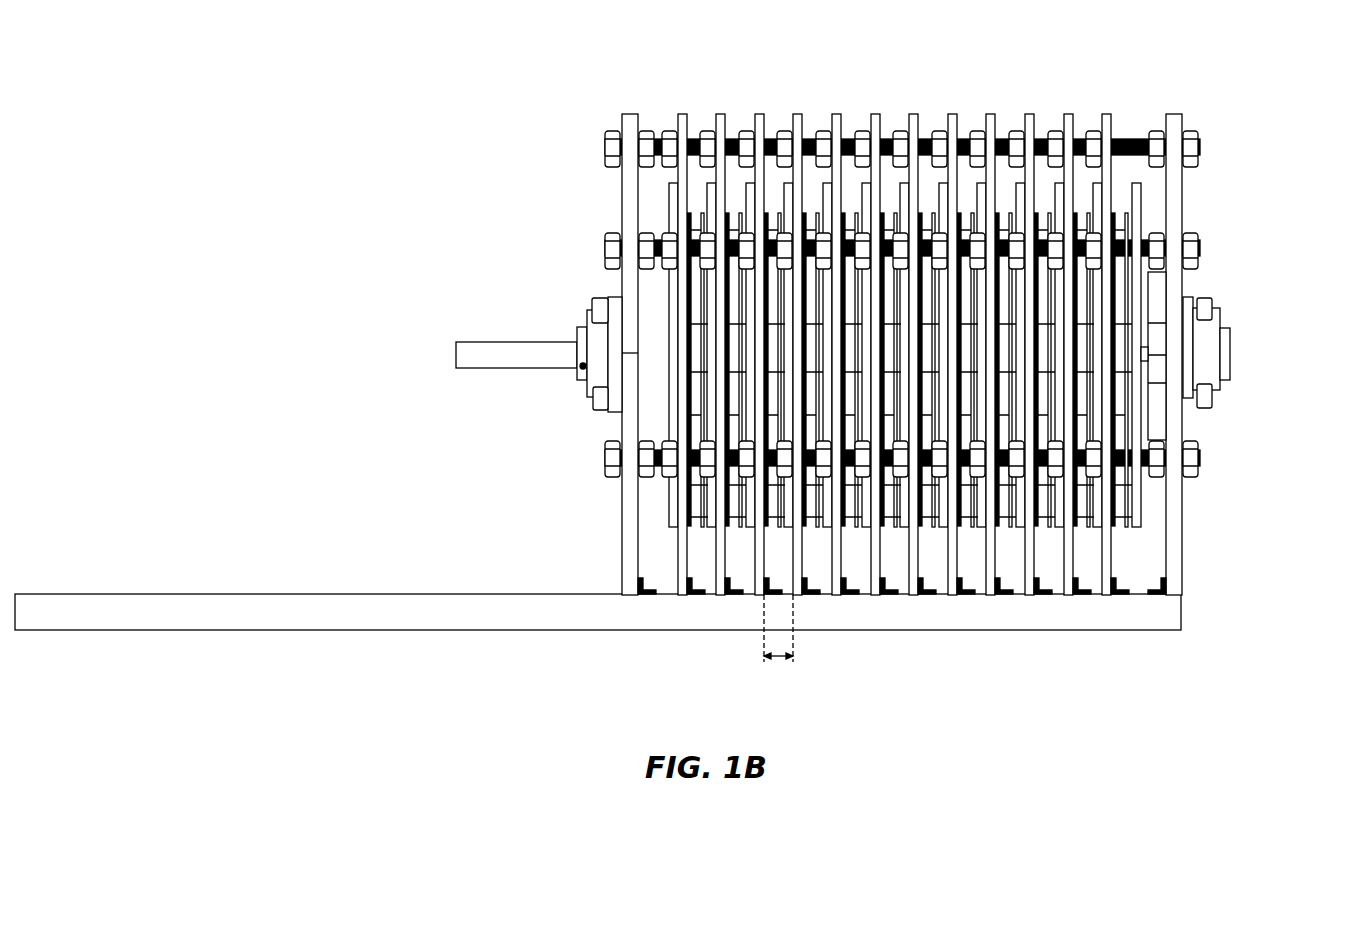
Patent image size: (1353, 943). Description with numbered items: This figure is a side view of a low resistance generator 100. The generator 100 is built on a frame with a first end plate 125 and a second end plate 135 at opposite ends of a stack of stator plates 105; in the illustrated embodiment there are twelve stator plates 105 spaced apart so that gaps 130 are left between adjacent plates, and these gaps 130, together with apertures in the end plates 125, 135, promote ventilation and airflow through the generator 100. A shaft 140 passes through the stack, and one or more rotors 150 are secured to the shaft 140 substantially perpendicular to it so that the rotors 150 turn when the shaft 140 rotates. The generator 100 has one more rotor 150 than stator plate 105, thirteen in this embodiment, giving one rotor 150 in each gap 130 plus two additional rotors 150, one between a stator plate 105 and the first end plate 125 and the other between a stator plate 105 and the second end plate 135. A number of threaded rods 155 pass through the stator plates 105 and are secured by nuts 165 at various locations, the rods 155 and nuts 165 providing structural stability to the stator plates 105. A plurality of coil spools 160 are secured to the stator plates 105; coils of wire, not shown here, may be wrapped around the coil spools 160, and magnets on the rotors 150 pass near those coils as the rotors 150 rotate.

The low resistance generator 100 is at (275, 192).
The stator plate 105 is at (957, 553).
The first end plate 125 is at (1177, 113).
The gap 130 is at (783, 654).
The second end plate 135 is at (637, 113).
The shaft 140 is at (528, 350).
The rotor 150 is at (747, 190).
The threaded rod 155 is at (1148, 473).
The coil spool 160 is at (1118, 433).
The nut 165 is at (750, 462).